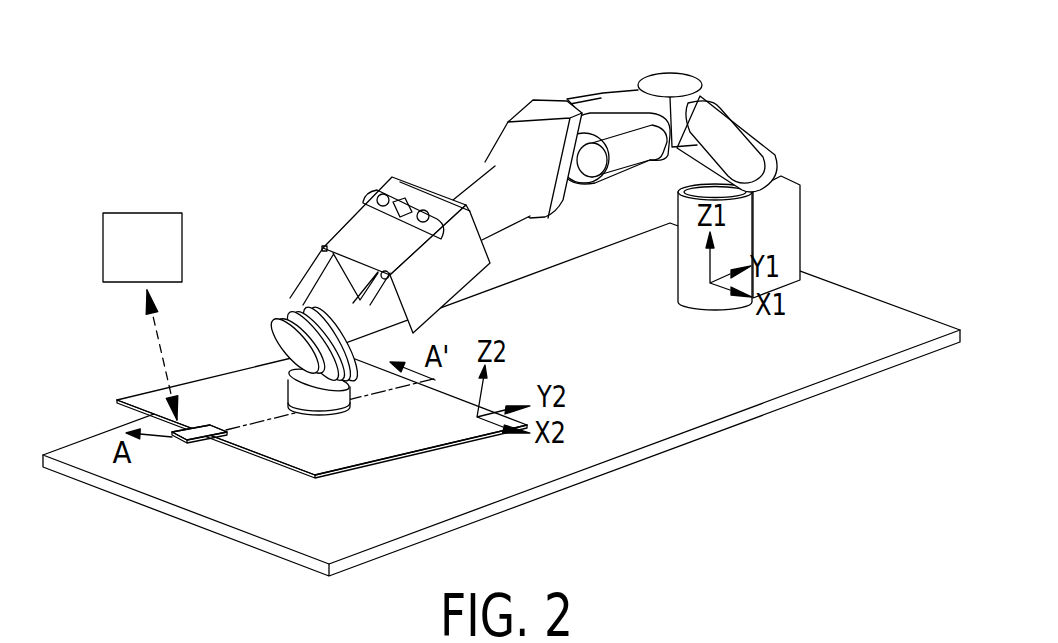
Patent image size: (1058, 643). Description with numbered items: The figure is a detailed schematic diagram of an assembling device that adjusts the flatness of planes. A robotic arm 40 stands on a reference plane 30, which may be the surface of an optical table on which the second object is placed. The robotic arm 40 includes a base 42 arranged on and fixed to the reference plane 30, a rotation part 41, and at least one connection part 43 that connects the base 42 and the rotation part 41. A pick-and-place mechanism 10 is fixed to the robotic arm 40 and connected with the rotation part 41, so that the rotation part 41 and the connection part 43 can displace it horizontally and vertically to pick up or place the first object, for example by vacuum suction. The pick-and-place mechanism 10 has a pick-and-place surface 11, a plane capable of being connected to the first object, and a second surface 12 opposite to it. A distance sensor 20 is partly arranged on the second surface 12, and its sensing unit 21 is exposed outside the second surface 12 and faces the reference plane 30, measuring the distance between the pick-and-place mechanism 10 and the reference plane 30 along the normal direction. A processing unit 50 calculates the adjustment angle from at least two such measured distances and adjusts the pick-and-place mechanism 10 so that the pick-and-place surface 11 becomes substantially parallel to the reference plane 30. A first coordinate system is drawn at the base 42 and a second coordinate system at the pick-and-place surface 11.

The pick-and-place mechanism 10 is at (158, 398).
The pick-and-place surface 11 is at (118, 403).
The second surface 12 is at (350, 450).
The distance sensor 20 is at (185, 438).
The sensing unit 21 is at (187, 447).
The reference plane 30 is at (245, 523).
The robotic arm 40 is at (533, 172).
The rotation part 41 is at (297, 393).
The base 42 is at (702, 297).
The connection part 43 is at (618, 137).
The processing unit 50 is at (142, 316).